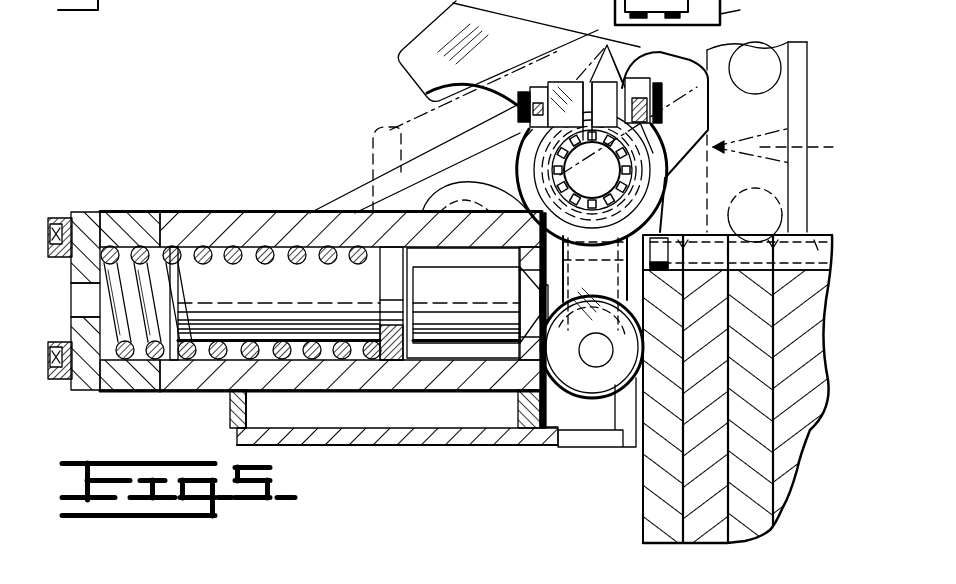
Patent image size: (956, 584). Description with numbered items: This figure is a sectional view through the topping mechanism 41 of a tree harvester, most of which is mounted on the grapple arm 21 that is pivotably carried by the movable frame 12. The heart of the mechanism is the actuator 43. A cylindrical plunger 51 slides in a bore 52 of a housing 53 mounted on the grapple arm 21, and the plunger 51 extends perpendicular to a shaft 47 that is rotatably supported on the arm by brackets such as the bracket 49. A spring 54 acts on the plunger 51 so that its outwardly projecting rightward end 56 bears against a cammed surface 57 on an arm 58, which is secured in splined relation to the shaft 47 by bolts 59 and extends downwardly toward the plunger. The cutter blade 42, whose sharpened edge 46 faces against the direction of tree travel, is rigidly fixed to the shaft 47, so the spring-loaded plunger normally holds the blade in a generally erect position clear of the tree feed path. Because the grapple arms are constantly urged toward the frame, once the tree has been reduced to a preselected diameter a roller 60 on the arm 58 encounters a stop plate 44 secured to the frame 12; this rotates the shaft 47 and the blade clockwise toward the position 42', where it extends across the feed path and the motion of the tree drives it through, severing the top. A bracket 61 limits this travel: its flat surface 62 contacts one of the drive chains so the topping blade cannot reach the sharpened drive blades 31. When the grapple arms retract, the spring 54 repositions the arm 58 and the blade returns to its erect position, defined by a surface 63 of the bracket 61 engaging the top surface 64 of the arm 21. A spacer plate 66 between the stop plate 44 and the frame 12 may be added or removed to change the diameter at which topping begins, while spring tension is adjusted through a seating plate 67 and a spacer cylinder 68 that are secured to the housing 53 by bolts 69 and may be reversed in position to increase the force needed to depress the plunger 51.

The movable frame 12 is at (812, 308).
The grapple arm 21 is at (352, 446).
The sharpened blade 31 is at (762, 152).
The topping mechanism 41 is at (282, 94).
The cutter blade 42 is at (543, 103).
The actuated blade position 42' is at (751, 130).
The actuator 43 is at (495, 404).
The stop plate 44 is at (650, 462).
The sharpened edge 46 is at (600, 35).
The shaft 47 is at (608, 190).
The bracket 49 is at (377, 135).
The cylindrical plunger 51 is at (222, 272).
The bore 52 is at (280, 262).
The housing 53 is at (186, 390).
The spring 54 is at (265, 262).
The rightward end of plunger 56 is at (540, 310).
The cammed surface 57 is at (540, 321).
The arm 58 is at (526, 291).
The bolts 59 is at (637, 95).
The roller 60 is at (595, 395).
The bracket 61 is at (432, 25).
The flat surface 62 is at (712, 150).
The surface of bracket 63 is at (358, 210).
The top surface of arm 64 is at (456, 212).
The spacer plate 66 is at (740, 524).
The seating plate 67 is at (87, 212).
The spacer cylinder 68 is at (145, 212).
The bolts 69 is at (50, 218).